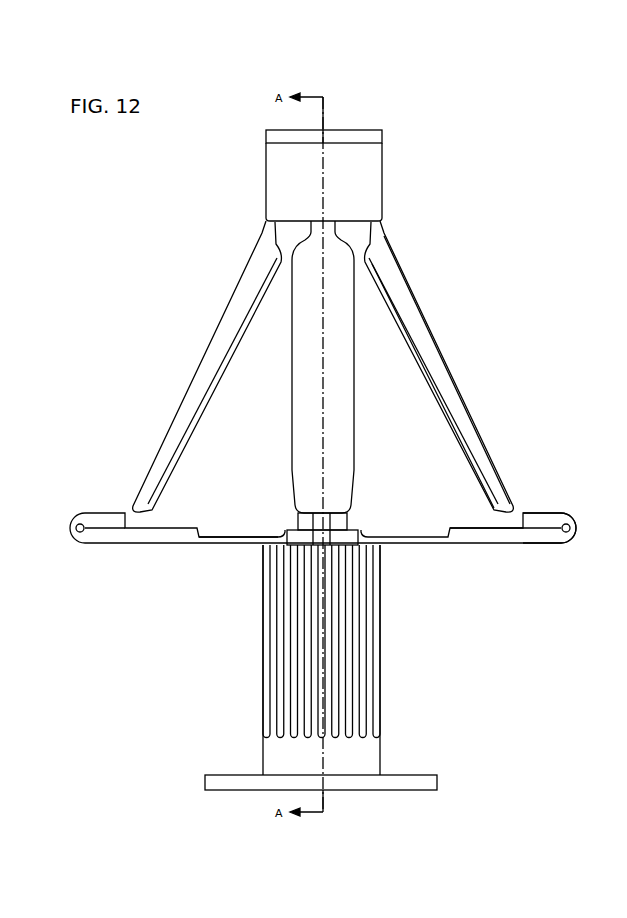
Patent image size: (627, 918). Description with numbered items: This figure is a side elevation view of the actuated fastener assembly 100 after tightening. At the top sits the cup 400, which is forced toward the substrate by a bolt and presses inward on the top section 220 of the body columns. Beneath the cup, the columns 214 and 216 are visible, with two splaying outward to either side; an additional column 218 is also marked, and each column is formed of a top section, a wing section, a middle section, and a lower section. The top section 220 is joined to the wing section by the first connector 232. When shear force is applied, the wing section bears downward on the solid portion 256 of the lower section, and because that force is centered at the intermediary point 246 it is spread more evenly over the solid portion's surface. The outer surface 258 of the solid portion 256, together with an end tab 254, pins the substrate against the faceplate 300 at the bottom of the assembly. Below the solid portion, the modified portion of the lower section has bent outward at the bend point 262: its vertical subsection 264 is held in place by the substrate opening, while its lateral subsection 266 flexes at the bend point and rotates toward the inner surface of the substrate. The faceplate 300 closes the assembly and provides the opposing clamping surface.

The fastener assembly 100 is at (370, 65).
The cup 400 is at (372, 131).
The top section 220 is at (365, 177).
The column 214 is at (323, 367).
The left support arm 218 is at (207, 366).
The column 216 is at (439, 366).
The first connector 232 is at (410, 298).
The intermediary point 246 is at (480, 493).
The end tab 254 is at (540, 522).
The solid portion 256 is at (472, 538).
The outer surface 258 is at (495, 540).
The lateral subsection 266 is at (230, 543).
The bend point 262 is at (263, 545).
The vertical subsection 264 is at (375, 673).
The faceplate 300 is at (418, 783).